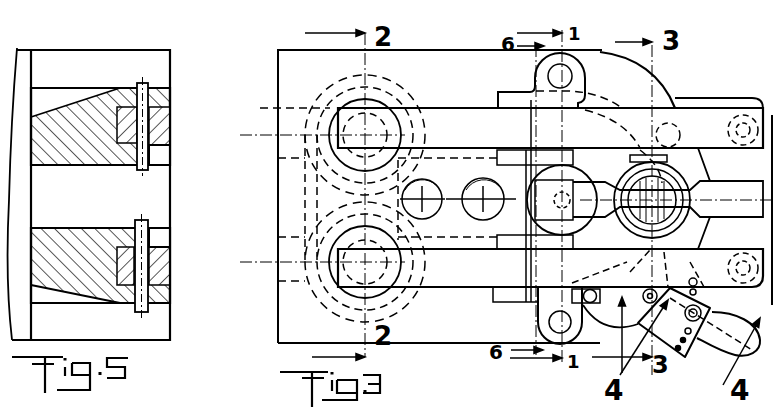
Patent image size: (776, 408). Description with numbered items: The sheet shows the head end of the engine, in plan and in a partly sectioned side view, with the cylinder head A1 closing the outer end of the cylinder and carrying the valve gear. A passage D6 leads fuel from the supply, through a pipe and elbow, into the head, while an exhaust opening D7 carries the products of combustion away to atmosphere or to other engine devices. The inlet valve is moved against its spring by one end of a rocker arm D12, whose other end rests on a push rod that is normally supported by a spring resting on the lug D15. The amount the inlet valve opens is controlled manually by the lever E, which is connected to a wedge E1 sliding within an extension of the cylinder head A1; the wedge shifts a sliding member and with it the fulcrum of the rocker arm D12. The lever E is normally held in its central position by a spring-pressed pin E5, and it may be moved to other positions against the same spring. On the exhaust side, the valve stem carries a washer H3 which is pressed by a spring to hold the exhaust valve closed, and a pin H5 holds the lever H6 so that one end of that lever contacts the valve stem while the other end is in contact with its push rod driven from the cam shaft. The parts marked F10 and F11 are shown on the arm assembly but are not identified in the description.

In FIG. 5, the cylinder head A1 is at (86, 57).
In FIG. 3, the cylinder head A1 is at (456, 337).
In FIG. 3, the passage D6 is at (285, 128).
In FIG. 3, the exhaust opening D7 is at (287, 273).
In FIG. 3, the washer H3 is at (300, 238).
In FIG. 3, the lever H6 is at (459, 279).
In FIG. 3, the pin H5 is at (526, 301).
In FIG. 3, the upper lug F11 is at (533, 100).
In FIG. 3, the upper arm F10 is at (712, 120).
In FIG. 3, the lug D15 is at (619, 117).
In FIG. 3, the rocker arm D12 is at (730, 198).
In FIG. 3, the wedge E1 is at (639, 195).
In FIG. 3, the lever E is at (738, 345).
In FIG. 3, the pin E5 is at (641, 327).